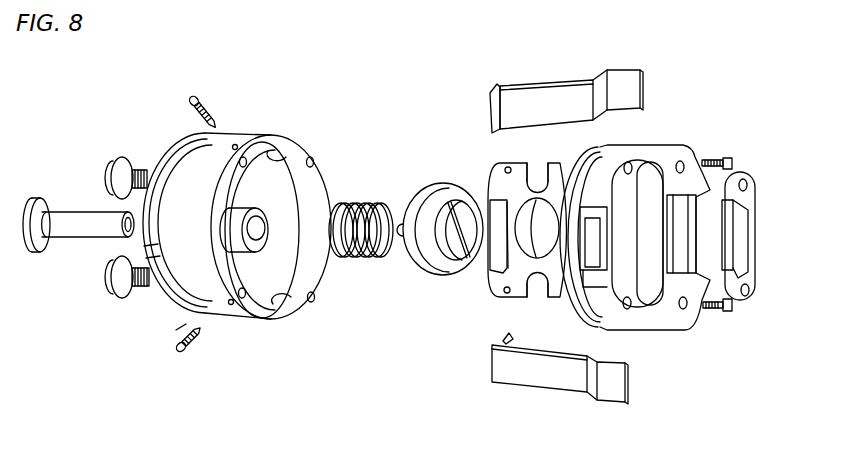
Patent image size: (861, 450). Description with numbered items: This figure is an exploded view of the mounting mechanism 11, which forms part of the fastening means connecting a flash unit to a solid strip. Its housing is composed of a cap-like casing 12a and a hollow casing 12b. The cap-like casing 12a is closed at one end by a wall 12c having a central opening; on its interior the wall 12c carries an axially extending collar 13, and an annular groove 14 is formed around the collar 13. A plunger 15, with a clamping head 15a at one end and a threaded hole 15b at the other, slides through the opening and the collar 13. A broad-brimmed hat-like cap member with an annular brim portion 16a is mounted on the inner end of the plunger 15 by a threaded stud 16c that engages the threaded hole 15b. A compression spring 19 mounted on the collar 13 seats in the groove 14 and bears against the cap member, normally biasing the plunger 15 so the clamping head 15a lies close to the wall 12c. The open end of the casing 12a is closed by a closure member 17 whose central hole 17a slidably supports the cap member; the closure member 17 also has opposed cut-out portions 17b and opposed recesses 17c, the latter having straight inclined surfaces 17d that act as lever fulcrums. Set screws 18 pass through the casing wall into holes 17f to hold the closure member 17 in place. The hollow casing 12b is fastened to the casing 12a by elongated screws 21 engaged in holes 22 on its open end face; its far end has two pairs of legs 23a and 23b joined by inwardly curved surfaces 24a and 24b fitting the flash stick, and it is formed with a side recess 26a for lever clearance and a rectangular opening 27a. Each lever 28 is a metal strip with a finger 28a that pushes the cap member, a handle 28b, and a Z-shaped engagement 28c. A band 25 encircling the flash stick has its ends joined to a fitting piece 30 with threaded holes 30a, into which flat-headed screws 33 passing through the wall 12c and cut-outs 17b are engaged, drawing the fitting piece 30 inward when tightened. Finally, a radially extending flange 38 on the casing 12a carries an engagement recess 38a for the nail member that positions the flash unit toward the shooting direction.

The mounting mechanism 11 is at (100, 148).
The cap-like casing 12a is at (185, 160).
The hollow casing 12b is at (700, 330).
The wall 12c is at (262, 290).
The collar 13 is at (245, 240).
The annular groove 14 is at (232, 205).
The plunger 15 is at (84, 232).
The clamping head 15a is at (34, 253).
The threaded hole 15b is at (108, 258).
The annular brim portion 16a is at (415, 262).
The threaded stud 16c is at (400, 227).
The closure member 17 is at (500, 288).
The hole 17a is at (497, 198).
The cut-out portions 17b is at (540, 180).
The recesses 17c is at (500, 250).
The surfaces 17d is at (498, 232).
The holes 17f is at (516, 164).
The set screws 18 is at (192, 96).
The compression spring 19 is at (360, 260).
The elongated screws 21 is at (752, 318).
The holes 22 is at (245, 157).
The legs 23a is at (688, 308).
The legs 23b is at (640, 162).
The curved surface 24a is at (652, 322).
The curved surface 24b is at (655, 160).
The band 25 is at (767, 224).
The side recess 26a is at (592, 246).
The rectangular opening 27a is at (592, 222).
The lever 28 is at (536, 100).
The finger 28a is at (492, 95).
The handle 28b is at (650, 55).
The engagement 28c is at (600, 76).
The fitting piece 30 is at (758, 193).
The threaded holes 30a is at (746, 186).
The flat-headed screws 33 is at (118, 157).
The flange 38 is at (178, 332).
The engagement recess 38a is at (153, 252).